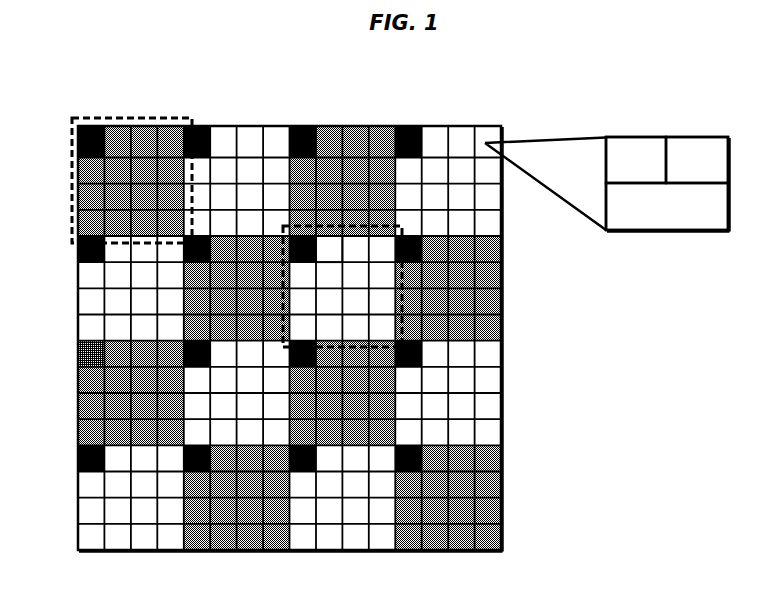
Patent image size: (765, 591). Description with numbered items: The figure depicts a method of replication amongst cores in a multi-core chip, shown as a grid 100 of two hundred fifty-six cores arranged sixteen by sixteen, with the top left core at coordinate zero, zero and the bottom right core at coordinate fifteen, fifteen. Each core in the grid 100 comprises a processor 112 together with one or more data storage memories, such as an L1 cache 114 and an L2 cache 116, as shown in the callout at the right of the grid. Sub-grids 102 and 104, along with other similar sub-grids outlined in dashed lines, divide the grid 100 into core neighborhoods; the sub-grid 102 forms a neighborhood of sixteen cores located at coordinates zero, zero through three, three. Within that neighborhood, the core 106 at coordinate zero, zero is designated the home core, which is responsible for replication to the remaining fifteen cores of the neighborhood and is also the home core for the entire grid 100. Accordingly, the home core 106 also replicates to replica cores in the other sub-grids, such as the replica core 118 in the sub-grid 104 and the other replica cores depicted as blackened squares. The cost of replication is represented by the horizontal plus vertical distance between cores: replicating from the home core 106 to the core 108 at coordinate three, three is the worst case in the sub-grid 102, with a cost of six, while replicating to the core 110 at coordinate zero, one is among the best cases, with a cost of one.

The grid 100 is at (547, 85).
The sub-grid 102 is at (104, 118).
The sub-grid 104 is at (398, 268).
The home core 106 is at (78, 130).
The core 108 is at (170, 222).
The core 110 is at (92, 172).
The processor 112 is at (626, 175).
The L1 cache 114 is at (686, 175).
The L2 cache 116 is at (671, 213).
The replica core 118 is at (316, 247).